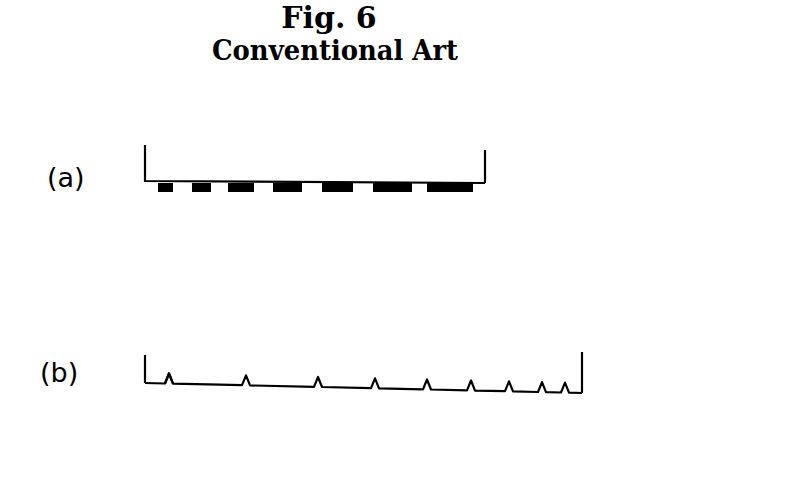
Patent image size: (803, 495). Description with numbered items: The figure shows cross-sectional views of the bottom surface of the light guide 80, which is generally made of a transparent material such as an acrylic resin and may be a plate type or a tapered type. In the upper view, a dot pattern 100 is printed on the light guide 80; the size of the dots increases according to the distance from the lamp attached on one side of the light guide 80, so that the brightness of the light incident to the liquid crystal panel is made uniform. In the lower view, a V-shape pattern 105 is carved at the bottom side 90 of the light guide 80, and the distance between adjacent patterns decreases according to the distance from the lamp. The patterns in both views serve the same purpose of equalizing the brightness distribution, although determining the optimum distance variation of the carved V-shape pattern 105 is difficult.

The light guide 80 is at (353, 135).
The bottom side 90 is at (482, 186).
The dot pattern 100 is at (240, 193).
The V-shape pattern 105 is at (169, 388).